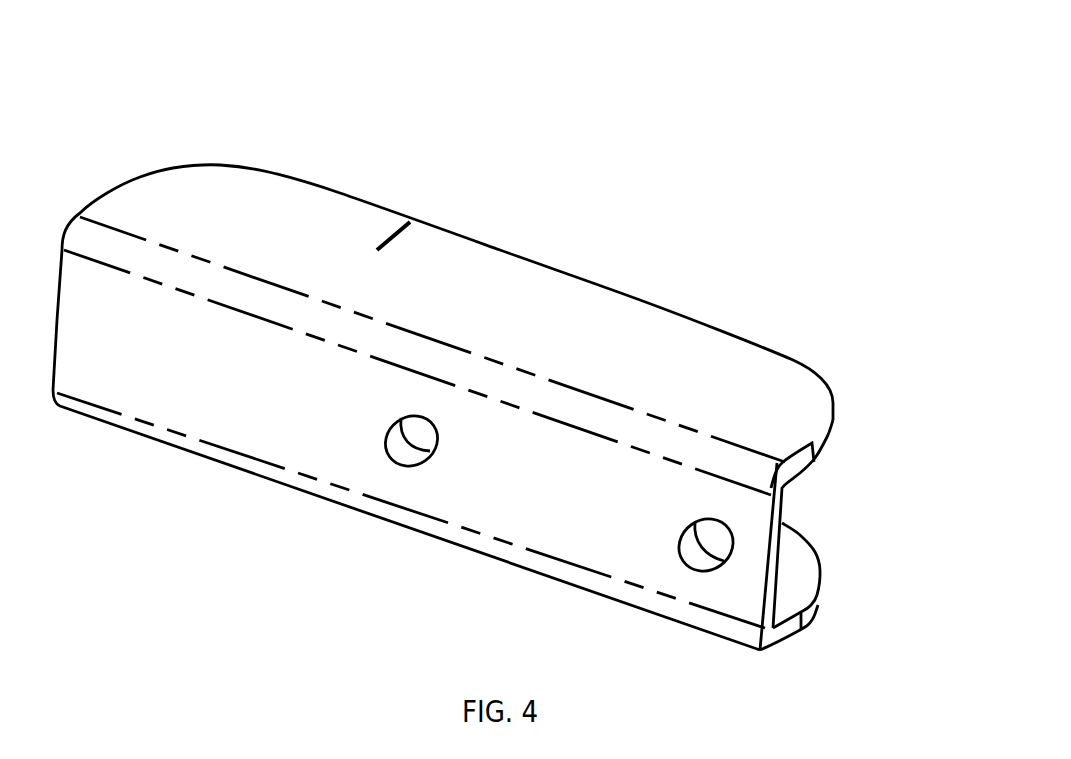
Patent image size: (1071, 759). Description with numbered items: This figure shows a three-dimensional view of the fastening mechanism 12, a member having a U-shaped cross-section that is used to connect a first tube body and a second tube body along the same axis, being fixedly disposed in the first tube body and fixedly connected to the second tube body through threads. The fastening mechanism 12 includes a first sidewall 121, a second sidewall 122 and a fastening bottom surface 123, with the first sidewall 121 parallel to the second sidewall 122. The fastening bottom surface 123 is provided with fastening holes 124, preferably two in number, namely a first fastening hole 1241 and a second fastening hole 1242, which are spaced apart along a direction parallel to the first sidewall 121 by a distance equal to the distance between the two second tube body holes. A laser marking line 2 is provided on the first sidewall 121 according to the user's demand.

The fastening mechanism 12 is at (562, 125).
The first sidewall 121 is at (532, 288).
The second sidewall 122 is at (798, 577).
The fastening bottom surface 123 is at (190, 400).
The fastening holes 124 is at (473, 539).
The first fastening hole 1241 is at (420, 447).
The second fastening hole 1242 is at (722, 547).
The laser marking line 2 is at (411, 220).